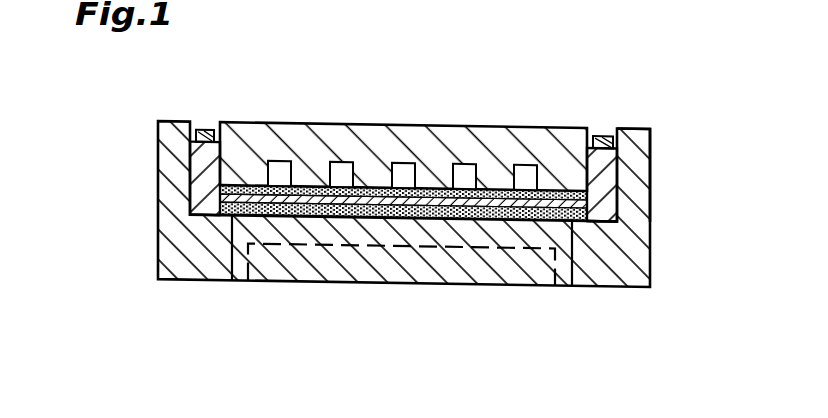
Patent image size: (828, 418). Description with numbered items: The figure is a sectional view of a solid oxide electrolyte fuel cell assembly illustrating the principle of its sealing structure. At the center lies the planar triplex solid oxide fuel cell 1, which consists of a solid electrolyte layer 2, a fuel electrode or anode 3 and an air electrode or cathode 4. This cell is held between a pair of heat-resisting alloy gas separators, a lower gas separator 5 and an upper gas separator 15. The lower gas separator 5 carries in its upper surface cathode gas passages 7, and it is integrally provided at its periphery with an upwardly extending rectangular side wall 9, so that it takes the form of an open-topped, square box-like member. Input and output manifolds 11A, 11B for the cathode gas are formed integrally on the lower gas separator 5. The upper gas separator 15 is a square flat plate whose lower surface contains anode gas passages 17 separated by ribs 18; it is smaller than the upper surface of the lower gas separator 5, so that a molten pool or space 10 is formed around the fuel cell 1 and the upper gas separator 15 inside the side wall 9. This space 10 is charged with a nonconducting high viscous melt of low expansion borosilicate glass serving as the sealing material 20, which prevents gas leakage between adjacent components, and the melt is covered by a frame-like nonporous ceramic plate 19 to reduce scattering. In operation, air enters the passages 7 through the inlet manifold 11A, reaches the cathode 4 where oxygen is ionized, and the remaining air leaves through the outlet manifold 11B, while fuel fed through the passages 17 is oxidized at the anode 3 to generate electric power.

The solid oxide fuel cell 1 is at (403, 283).
The solid electrolyte layer 2 is at (503, 208).
The fuel electrode or anode 3 is at (468, 216).
The air electrode or cathode 4 is at (533, 222).
The lower gas separator 5 is at (163, 256).
The cathode gas passages 7 is at (318, 230).
The side wall 9 is at (650, 131).
The molten pool or space 10 is at (185, 155).
The input manifold 11A is at (413, 314).
The output manifold 11B is at (570, 283).
The upper gas separator 15 is at (420, 140).
The anode gas passages 17 is at (336, 158).
The ribs 18 is at (370, 186).
The frame-like nonporous ceramic plate 19 is at (205, 130).
The sealing material 20 is at (185, 195).